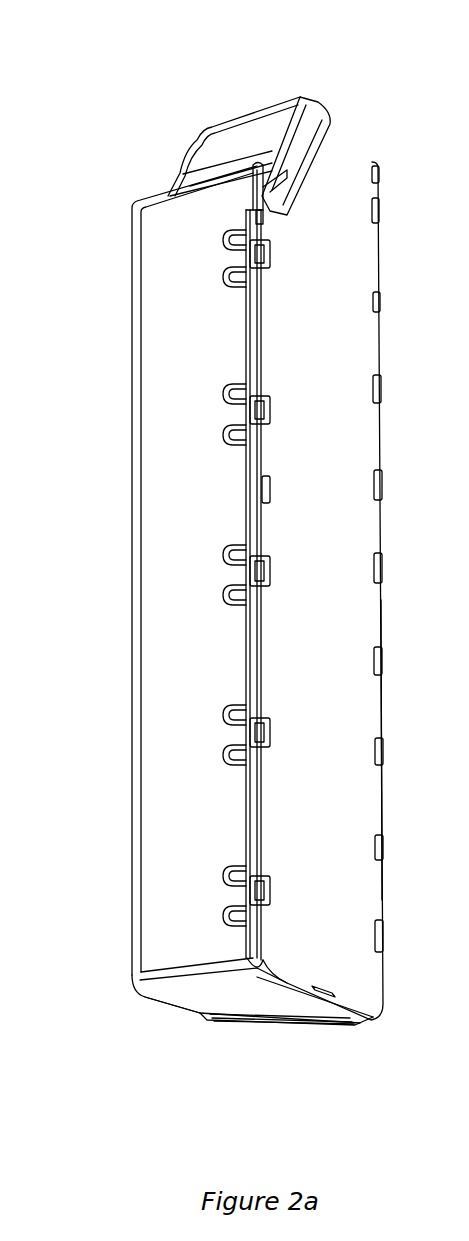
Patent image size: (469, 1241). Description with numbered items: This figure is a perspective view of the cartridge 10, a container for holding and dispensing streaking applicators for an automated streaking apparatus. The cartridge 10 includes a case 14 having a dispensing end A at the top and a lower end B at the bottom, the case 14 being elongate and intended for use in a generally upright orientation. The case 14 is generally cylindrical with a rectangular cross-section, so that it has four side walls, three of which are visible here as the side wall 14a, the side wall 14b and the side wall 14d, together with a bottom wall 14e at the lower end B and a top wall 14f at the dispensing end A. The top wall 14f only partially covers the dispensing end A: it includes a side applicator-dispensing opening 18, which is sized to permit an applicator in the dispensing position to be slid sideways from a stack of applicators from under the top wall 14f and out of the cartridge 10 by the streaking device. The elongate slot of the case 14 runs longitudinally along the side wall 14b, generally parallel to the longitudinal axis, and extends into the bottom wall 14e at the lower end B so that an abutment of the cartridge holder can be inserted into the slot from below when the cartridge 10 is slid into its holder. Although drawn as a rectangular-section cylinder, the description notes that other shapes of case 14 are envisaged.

The cartridge 10 is at (115, 388).
The case 14 is at (152, 677).
The side wall 14a is at (155, 827).
The side wall 14b is at (425, 750).
The side wall 14d is at (375, 716).
The bottom wall 14e is at (203, 1003).
The top wall 14f is at (187, 185).
The side applicator-dispensing opening 18 is at (312, 165).
The dispensing end A is at (205, 100).
The lower end B is at (132, 1016).